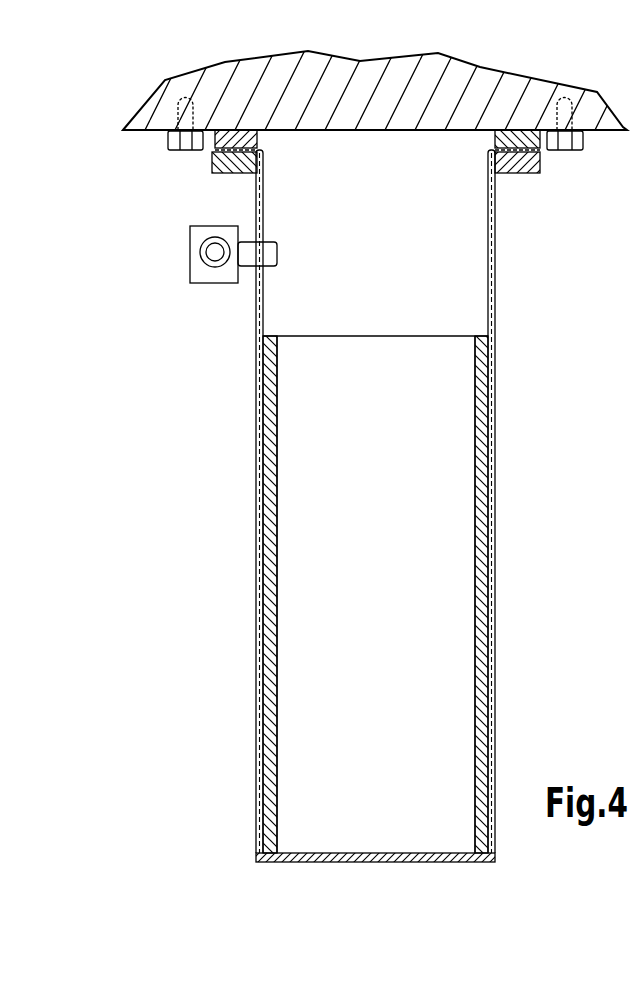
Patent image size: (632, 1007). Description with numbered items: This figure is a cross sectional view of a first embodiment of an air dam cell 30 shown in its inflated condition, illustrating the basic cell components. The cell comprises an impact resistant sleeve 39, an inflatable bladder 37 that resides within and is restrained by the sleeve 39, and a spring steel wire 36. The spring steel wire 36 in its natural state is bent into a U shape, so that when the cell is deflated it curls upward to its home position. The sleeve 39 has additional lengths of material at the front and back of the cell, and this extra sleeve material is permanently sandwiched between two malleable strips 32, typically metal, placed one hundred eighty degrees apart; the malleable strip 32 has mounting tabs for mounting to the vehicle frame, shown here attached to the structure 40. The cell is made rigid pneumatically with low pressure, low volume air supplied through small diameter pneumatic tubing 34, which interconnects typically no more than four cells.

The air dam cell 30 is at (387, 525).
The malleable strip 32 is at (531, 177).
The pneumatic tubing 34 is at (189, 255).
The spring steel wire 36 is at (253, 668).
The inflatable bladder 37 is at (466, 740).
The impact resistant sleeve 39 is at (498, 632).
The deck plate 40 is at (510, 85).